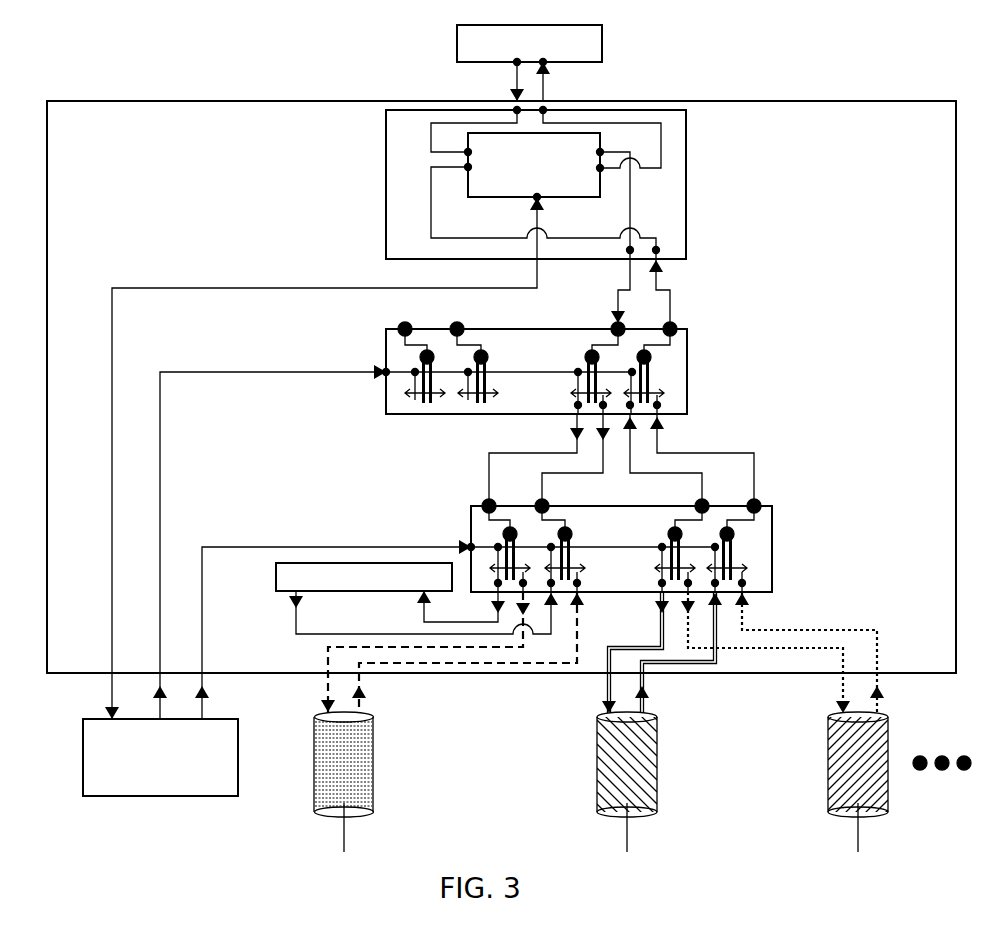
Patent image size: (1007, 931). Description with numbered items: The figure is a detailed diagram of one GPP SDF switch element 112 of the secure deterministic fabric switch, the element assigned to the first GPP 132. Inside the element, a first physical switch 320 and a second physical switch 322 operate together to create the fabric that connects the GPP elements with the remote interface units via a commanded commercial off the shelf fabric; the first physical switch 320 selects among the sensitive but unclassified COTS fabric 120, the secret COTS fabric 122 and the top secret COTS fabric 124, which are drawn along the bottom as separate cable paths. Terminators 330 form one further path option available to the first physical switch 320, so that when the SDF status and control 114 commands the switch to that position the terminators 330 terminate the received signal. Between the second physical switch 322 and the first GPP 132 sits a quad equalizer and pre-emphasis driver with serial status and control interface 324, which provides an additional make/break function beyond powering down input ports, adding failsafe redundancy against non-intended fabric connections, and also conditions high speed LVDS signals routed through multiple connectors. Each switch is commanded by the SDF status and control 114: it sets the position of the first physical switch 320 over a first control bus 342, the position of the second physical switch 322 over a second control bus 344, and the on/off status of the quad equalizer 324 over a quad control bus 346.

The GPP SDF switch element 112 is at (886, 100).
The SDF status and control 114 is at (227, 716).
The sensitive but unclassified (SBU) COTS fabric 120 is at (314, 730).
The secret (S) COTS fabric 122 is at (597, 730).
The top secret (TS) COTS fabric 124 is at (828, 726).
The first GPP 132 is at (456, 42).
The first physical switch 320 is at (772, 531).
The second physical switch 322 is at (687, 355).
The quad equalizer and pre-emphasis driver w/serial status and control interface 324 is at (686, 196).
The terminators 330 is at (276, 577).
The first control bus 342 is at (240, 546).
The second control bus 344 is at (238, 372).
The quad control bus 346 is at (233, 287).